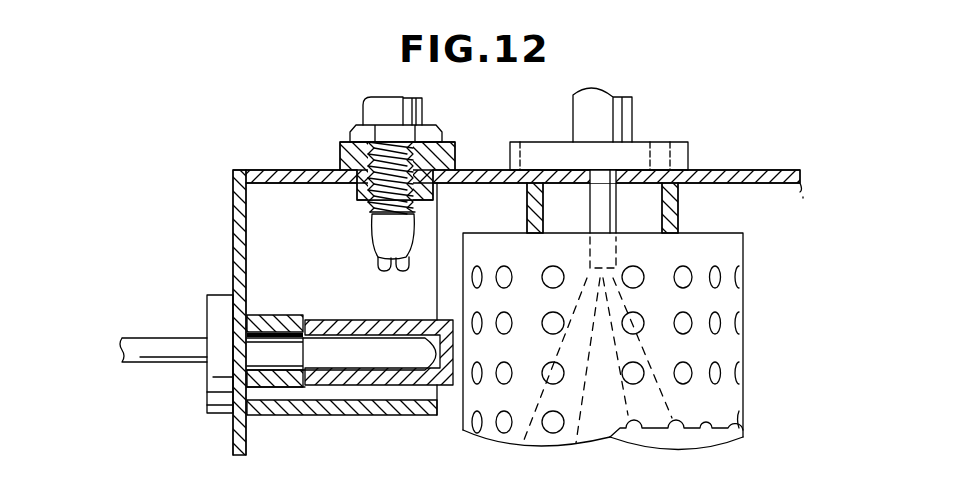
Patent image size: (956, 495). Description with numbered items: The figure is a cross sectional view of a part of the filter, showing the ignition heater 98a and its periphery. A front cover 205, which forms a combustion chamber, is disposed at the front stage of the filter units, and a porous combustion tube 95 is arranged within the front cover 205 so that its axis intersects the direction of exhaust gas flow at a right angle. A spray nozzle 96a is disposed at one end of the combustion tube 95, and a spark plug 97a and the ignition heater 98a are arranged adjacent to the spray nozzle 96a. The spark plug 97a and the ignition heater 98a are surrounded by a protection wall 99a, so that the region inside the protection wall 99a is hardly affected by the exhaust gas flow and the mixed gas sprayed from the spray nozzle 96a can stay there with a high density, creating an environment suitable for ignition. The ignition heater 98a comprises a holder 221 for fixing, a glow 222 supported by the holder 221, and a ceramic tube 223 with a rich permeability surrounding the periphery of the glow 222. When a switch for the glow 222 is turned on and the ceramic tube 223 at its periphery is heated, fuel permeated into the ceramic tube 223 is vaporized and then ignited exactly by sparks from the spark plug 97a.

The front cover 205 is at (261, 170).
The ignition heater 98a is at (272, 302).
The spark plug 97a is at (372, 235).
The spray nozzle 96a is at (615, 193).
The porous combustion tube 95 is at (743, 295).
The holder 221 is at (247, 335).
The glow 222 is at (403, 358).
The ceramic tube 223 is at (366, 320).
The protection wall 99a is at (328, 408).